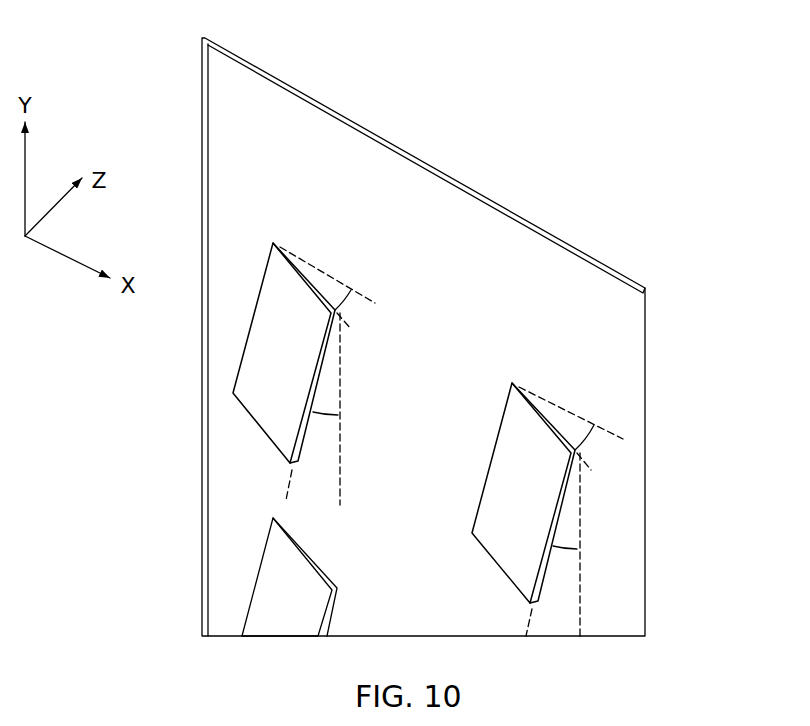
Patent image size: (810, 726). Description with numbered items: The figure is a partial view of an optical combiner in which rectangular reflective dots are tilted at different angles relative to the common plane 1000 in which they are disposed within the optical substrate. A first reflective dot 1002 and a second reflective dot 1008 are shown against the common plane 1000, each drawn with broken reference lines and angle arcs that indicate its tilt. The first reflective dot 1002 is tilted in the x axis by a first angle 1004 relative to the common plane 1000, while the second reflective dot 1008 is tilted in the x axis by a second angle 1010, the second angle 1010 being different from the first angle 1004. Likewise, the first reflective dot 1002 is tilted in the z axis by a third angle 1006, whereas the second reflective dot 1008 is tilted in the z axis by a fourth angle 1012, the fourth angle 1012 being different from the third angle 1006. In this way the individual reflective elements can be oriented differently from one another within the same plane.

The common plane 1000 is at (218, 168).
The first reflective dot 1002 is at (283, 282).
The first angle 1004 is at (350, 277).
The third angle 1006 is at (340, 353).
The second reflective dot 1008 is at (521, 424).
The second angle 1010 is at (591, 430).
The fourth angle 1012 is at (572, 496).